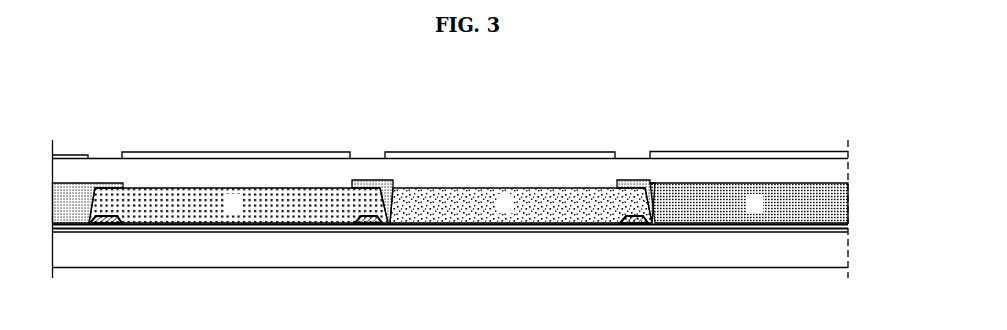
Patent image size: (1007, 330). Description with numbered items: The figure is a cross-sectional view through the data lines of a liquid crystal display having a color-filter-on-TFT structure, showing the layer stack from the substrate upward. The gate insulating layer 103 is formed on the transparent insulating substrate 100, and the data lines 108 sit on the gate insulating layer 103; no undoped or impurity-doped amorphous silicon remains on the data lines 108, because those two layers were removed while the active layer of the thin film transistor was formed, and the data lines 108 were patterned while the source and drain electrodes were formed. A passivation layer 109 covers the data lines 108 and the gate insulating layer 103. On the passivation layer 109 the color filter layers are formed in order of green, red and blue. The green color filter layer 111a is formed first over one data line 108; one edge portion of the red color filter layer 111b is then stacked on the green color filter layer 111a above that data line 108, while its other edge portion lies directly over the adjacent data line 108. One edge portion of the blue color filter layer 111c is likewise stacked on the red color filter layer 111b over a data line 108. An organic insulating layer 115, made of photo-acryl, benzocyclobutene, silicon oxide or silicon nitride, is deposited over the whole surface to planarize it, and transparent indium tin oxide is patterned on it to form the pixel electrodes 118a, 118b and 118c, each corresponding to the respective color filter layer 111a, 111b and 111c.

The transparent insulating substrate 100 is at (848, 248).
The gate insulating layer 103 is at (848, 226).
The data line 108 is at (105, 225).
The passivation layer 109 is at (848, 220).
The green color filter layer 111a is at (257, 225).
The red color filter layer 111b is at (523, 223).
The blue color filter layer 111c is at (67, 192).
The organic insulating layer 115 is at (848, 168).
The first pixel electrode 118a is at (232, 152).
The second pixel electrode 118b is at (503, 152).
The third pixel electrode 118c is at (745, 152).